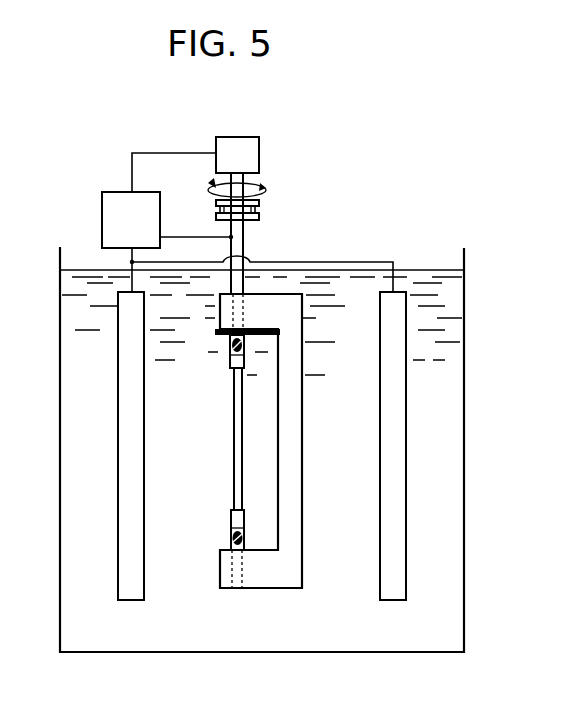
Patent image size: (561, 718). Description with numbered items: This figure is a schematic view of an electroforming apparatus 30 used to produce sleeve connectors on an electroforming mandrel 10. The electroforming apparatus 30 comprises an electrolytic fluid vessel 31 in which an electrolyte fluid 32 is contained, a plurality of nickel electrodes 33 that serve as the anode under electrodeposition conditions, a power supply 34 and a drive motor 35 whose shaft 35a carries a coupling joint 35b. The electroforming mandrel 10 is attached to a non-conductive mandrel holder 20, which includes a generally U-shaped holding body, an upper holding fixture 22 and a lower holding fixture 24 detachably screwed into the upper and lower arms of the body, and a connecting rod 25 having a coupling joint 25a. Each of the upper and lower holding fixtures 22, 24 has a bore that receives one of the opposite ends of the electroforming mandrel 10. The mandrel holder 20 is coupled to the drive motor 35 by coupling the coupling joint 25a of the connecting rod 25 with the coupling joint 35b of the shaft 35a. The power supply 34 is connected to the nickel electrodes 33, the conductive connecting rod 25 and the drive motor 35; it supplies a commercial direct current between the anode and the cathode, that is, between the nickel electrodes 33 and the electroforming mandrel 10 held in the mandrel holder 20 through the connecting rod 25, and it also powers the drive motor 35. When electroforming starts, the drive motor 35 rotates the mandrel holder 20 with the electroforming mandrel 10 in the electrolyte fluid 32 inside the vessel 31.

The electroforming mandrel 10 is at (225, 414).
The mandrel holder 20 is at (309, 478).
The upper holding fixture 22 is at (230, 356).
The lower holding fixture 24 is at (231, 517).
The connecting rod 25 is at (245, 252).
The coupling joint 25a is at (258, 217).
The electroforming apparatus 30 is at (436, 216).
The electrolytic fluid vessel 31 is at (465, 355).
The electrolyte fluid 32 is at (352, 535).
The nickel electrodes 33 is at (118, 538).
The power supply 34 is at (103, 197).
The drive motor 35 is at (255, 136).
The shaft 35a is at (262, 187).
The coupling joint 35b is at (189, 192).